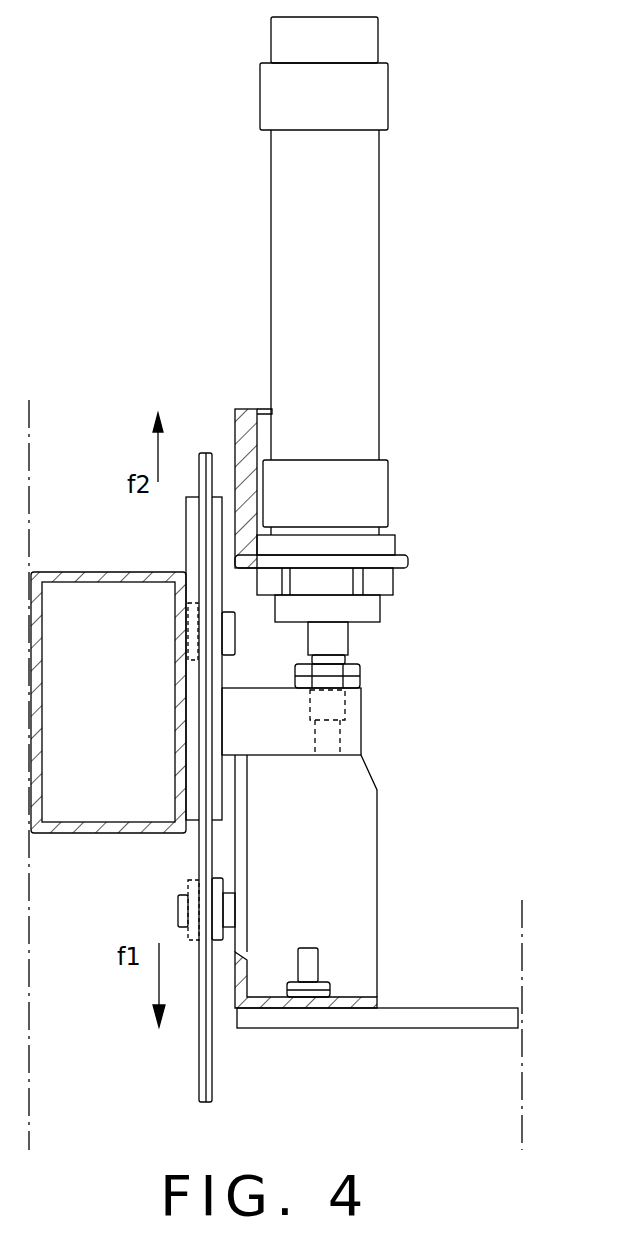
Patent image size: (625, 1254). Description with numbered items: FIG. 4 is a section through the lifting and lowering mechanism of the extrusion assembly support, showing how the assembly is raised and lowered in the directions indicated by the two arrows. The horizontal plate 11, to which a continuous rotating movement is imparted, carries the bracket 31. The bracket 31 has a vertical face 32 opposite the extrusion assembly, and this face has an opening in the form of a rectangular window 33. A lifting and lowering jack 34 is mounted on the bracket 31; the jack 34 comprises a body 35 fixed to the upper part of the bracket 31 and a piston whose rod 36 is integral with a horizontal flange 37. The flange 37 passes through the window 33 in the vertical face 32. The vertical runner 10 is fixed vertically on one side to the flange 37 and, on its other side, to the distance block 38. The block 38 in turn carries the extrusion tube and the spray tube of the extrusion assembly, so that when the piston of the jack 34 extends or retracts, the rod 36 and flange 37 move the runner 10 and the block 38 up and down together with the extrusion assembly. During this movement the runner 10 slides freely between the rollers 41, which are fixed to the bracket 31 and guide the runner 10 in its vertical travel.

The vertical runner 10 is at (200, 1070).
The horizontal plate 11 is at (410, 1030).
The bracket 31 is at (377, 884).
The vertical face 32 is at (236, 422).
The rectangular window 33 is at (233, 952).
The lifting and lowering jack 34 is at (379, 358).
The body 35 is at (358, 280).
The rod 36 is at (333, 638).
The horizontal flange 37 is at (355, 728).
The distance block 38 is at (104, 834).
The rollers 41 is at (196, 578).